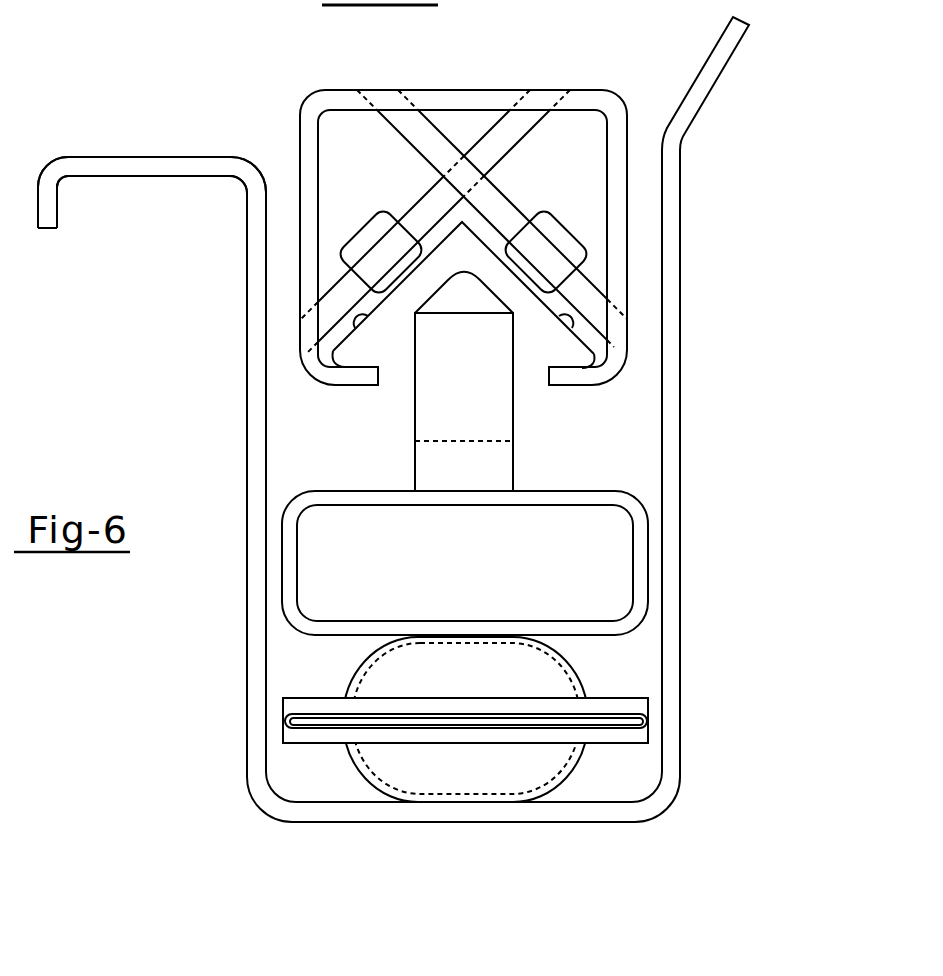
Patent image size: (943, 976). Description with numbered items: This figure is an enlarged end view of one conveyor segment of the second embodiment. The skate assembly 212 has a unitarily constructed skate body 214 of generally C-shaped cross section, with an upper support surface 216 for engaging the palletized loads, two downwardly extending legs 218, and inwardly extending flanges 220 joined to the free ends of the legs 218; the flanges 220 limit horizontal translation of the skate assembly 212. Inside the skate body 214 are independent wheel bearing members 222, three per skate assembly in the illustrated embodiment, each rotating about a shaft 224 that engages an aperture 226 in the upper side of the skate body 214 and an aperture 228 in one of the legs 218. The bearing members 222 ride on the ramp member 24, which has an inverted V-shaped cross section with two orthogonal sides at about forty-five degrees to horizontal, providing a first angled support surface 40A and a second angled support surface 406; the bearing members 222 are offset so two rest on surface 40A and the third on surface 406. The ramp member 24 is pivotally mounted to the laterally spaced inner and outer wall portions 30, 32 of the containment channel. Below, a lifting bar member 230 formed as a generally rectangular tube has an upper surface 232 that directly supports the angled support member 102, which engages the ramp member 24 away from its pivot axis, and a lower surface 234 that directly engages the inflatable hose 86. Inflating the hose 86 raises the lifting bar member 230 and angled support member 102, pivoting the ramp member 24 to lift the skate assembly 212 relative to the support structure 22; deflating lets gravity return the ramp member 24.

The support structure 22 is at (150, 157).
The ramp member 24 is at (570, 350).
The inner wall portion 30 is at (247, 290).
The outer wall portion 32 is at (681, 300).
The first angled support surface 40A is at (372, 313).
The second angled support surface 406 is at (562, 330).
The inflatable hose 86 is at (347, 680).
The angled support member 102 is at (445, 418).
The skate assembly 212 is at (585, 81).
The skate body 214 is at (300, 157).
The upper support surface 216 is at (490, 90).
The downwardly extending legs 218 is at (300, 218).
The inwardly extending flanges 220 is at (350, 386).
The bearing members 222 is at (347, 255).
The shaft 224 is at (330, 366).
The aperture 226 is at (410, 100).
The aperture 228 is at (628, 303).
The lifting bar member 230 is at (650, 565).
The upper surface 232 is at (575, 490).
The lower surface 234 is at (590, 640).